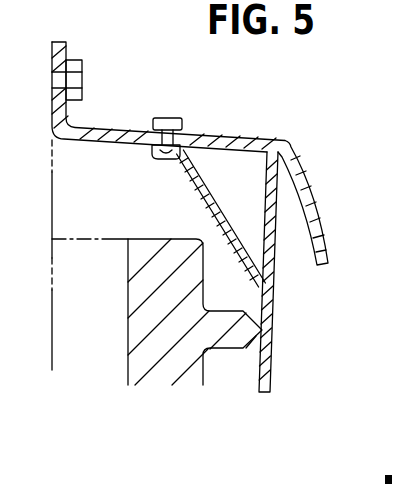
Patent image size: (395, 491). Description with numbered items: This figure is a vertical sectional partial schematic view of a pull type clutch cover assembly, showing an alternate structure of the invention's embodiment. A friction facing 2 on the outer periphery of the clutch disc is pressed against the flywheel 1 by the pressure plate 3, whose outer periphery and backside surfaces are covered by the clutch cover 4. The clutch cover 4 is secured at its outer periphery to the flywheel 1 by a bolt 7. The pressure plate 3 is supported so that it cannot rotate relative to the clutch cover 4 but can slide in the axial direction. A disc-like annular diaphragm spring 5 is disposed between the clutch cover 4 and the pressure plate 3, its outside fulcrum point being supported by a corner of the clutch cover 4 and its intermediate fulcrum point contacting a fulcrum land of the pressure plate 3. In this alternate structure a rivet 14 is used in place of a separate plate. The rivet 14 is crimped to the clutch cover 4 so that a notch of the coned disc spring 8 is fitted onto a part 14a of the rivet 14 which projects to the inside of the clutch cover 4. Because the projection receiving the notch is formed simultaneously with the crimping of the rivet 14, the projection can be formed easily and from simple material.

The flywheel 1 is at (40, 188).
The friction facing 2 is at (80, 352).
The pressure plate 3 is at (167, 372).
The clutch cover 4 is at (244, 134).
The diaphragm spring 5 is at (278, 320).
The bolt 7 is at (72, 80).
The coned disc spring 8 is at (212, 211).
The rivet 14 is at (168, 137).
The part of the rivet 14a is at (155, 158).